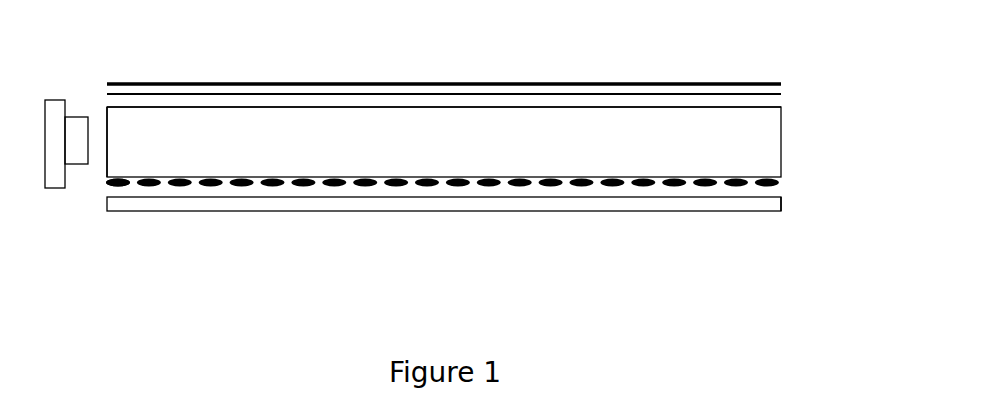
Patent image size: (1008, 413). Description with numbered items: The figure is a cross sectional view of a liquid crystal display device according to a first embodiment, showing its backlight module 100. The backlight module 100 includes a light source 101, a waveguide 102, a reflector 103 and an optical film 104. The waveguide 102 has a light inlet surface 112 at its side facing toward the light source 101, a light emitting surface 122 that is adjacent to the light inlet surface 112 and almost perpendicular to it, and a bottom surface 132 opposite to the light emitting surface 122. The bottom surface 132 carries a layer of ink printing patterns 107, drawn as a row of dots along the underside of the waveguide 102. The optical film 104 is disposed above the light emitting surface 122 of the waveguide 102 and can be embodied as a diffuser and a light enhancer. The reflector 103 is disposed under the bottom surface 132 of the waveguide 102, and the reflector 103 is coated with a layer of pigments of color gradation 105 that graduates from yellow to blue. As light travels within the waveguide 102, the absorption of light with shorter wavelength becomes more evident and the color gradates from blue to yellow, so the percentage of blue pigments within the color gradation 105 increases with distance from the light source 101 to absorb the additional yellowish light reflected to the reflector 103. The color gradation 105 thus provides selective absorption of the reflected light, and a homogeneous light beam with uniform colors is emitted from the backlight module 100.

The backlight module 100 is at (472, 42).
The light source 101 is at (84, 165).
The waveguide 102 is at (781, 147).
The reflector 103 is at (508, 209).
The optical film 104 is at (800, 84).
The pigments of color gradation 105 is at (782, 197).
The ink printing patterns 107 is at (108, 186).
The light inlet surface 112 is at (107, 136).
The light emitting surface 122 is at (114, 107).
The bottom surface 132 is at (782, 181).